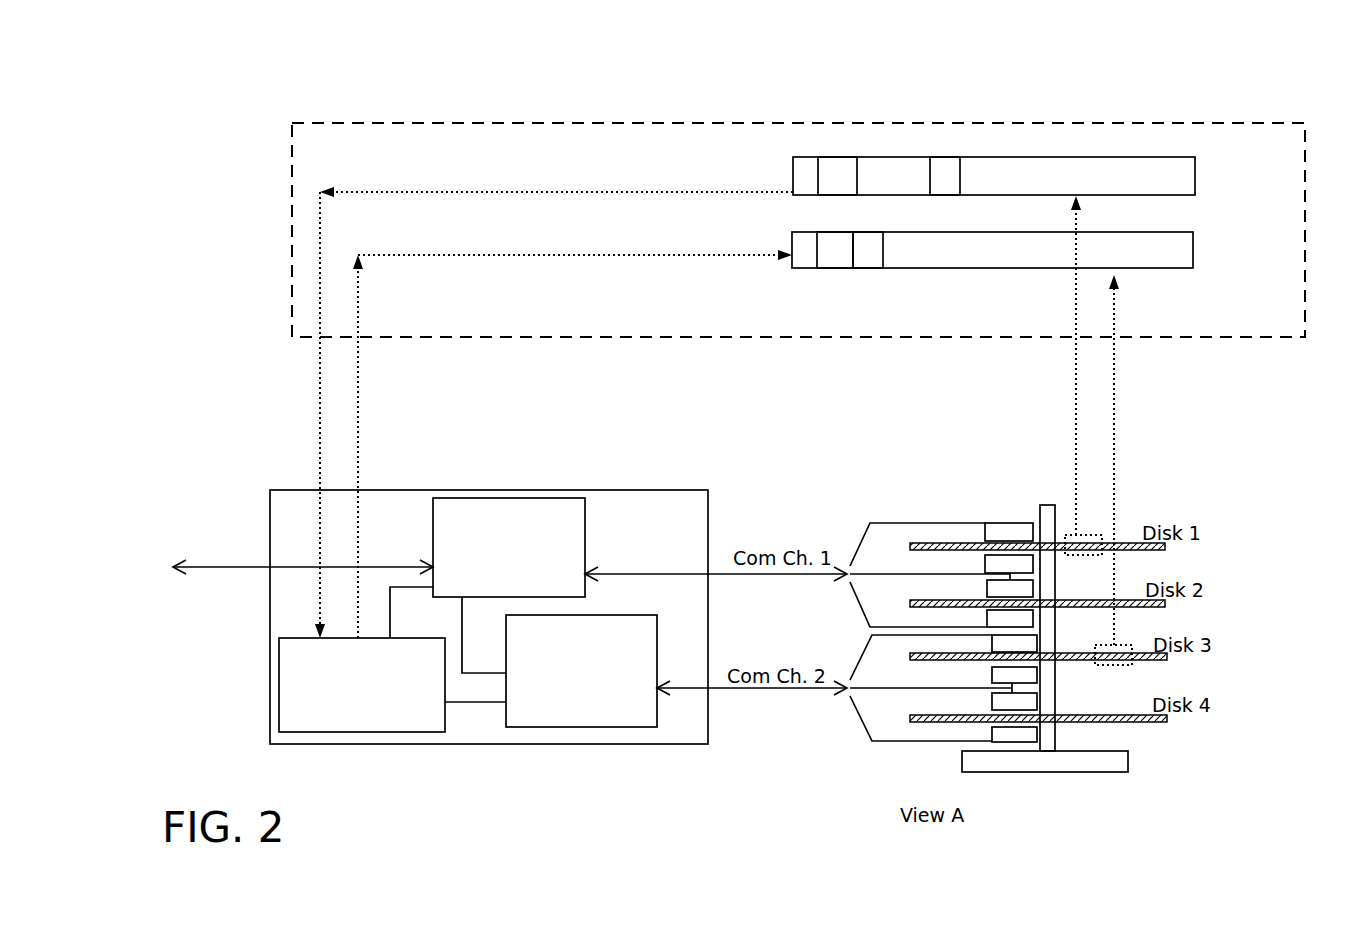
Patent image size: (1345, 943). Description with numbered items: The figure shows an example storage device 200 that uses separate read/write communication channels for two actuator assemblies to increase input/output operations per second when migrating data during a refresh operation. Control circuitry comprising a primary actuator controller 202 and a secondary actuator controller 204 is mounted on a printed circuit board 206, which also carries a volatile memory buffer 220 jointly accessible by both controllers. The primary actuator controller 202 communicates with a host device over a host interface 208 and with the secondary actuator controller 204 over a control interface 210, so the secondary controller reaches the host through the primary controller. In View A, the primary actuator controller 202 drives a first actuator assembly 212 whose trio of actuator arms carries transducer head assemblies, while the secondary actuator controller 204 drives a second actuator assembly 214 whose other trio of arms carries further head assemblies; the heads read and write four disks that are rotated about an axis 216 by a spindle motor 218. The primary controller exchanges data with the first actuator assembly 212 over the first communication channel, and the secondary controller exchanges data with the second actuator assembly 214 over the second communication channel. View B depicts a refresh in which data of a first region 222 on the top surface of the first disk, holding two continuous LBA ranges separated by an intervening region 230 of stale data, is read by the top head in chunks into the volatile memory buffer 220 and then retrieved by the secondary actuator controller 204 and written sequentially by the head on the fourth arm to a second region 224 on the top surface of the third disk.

The storage device 200 is at (266, 96).
The primary actuator controller 202 is at (509, 547).
The secondary actuator controller 204 is at (581, 671).
The printed circuit board (PCB) 206 is at (489, 617).
The host interface 208 is at (330, 563).
The control interface 210 is at (482, 673).
The first actuator assembly 212 is at (835, 526).
The second actuator assembly 214 is at (820, 716).
The axis 216 is at (1040, 510).
The spindle motor 218 is at (1045, 761).
The volatile memory buffer 220 is at (362, 685).
The first region 222 is at (1195, 175).
The second region 224 is at (1193, 255).
The intervening region 230 is at (897, 177).